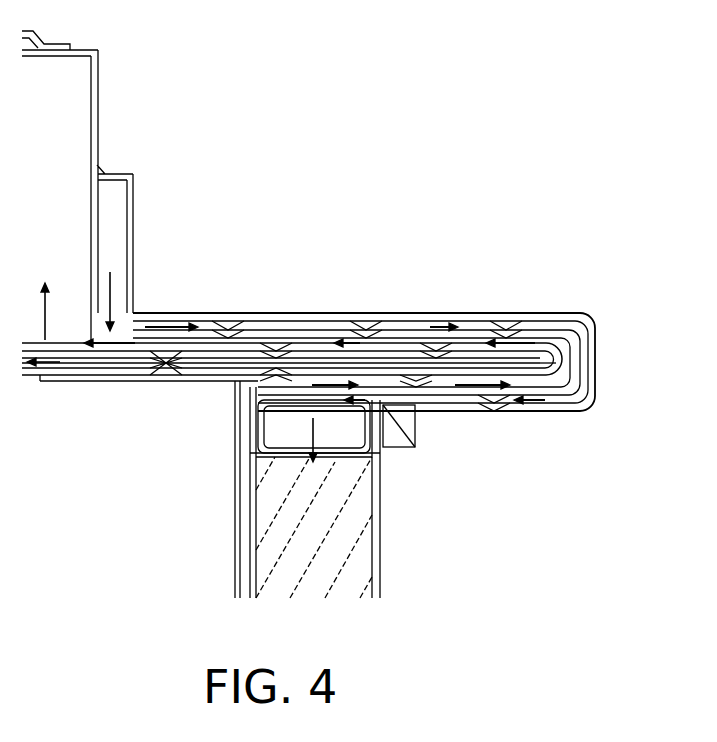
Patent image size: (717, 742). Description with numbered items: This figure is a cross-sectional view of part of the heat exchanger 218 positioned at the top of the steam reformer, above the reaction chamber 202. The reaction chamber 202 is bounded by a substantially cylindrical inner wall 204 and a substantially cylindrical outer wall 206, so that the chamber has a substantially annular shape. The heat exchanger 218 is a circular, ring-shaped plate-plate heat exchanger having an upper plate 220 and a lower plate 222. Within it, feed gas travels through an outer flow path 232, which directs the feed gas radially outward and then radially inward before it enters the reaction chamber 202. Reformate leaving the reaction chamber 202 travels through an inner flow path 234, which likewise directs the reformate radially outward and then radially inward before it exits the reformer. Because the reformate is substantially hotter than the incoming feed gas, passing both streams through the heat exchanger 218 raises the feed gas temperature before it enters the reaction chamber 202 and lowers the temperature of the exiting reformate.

The heat exchanger 218 is at (407, 299).
The upper plate 220 is at (200, 313).
The lower plate 222 is at (487, 411).
The outer flow path 232 is at (580, 330).
The inner flow path 234 is at (578, 384).
The inner wall 204 is at (235, 542).
The outer wall 206 is at (380, 573).
The reaction chamber 202 is at (332, 549).